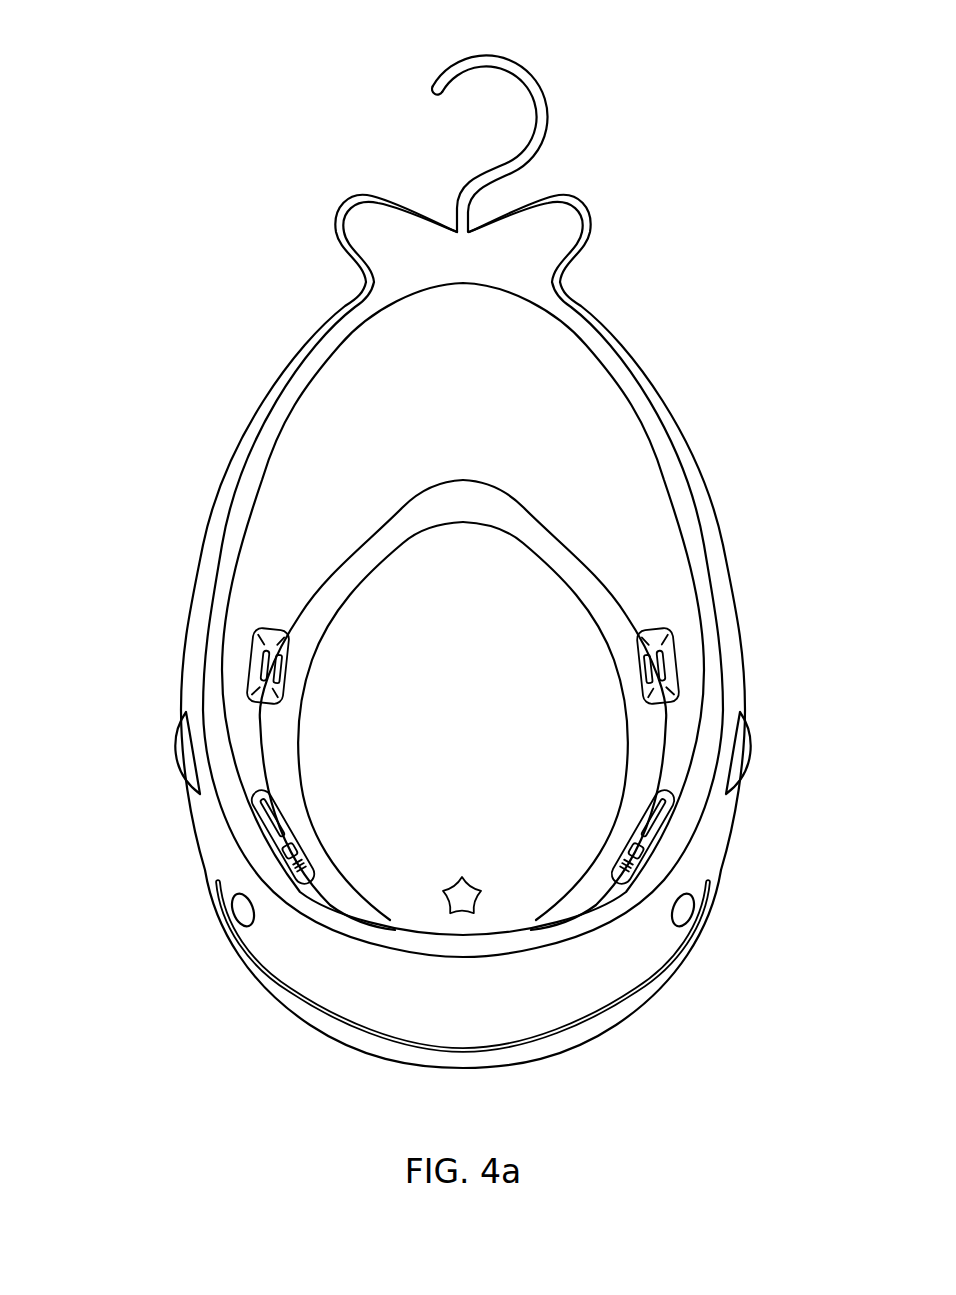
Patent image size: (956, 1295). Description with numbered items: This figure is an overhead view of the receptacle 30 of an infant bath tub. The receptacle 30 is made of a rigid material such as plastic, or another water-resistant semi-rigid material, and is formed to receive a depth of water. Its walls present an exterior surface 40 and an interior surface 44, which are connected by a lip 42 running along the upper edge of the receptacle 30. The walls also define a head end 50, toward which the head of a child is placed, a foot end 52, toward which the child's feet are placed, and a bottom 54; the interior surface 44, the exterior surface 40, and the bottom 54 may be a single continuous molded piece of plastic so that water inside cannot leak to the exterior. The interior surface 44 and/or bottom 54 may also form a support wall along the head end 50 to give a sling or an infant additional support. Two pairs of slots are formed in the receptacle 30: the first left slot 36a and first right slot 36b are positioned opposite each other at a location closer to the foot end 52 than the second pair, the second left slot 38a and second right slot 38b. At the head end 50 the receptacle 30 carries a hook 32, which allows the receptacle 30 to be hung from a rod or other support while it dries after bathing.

The receptacle 30 is at (138, 500).
The hook 32 is at (453, 68).
The first left slot 36a is at (645, 840).
The first right slot 36b is at (273, 838).
The second left slot 38a is at (660, 658).
The second right slot 38b is at (263, 657).
The exterior surface 40 is at (728, 612).
The lip 42 is at (637, 392).
The interior surface 44 is at (300, 458).
The head end 50 is at (398, 248).
The foot end 52 is at (560, 985).
The bottom 54 is at (588, 772).